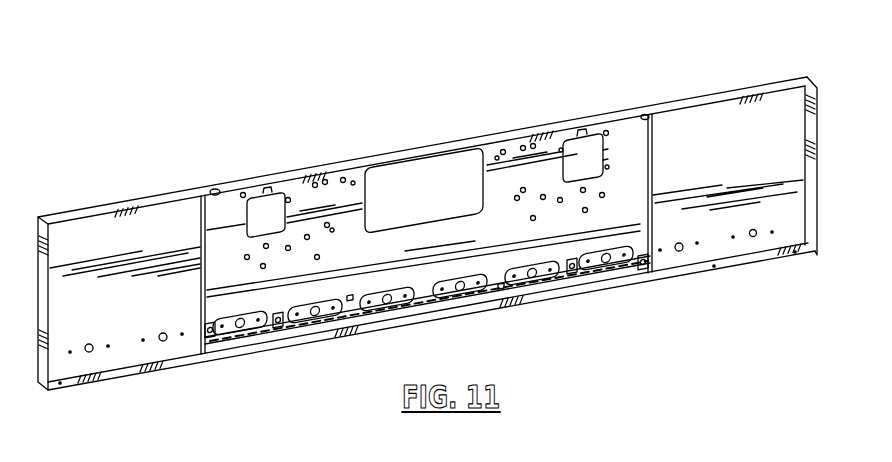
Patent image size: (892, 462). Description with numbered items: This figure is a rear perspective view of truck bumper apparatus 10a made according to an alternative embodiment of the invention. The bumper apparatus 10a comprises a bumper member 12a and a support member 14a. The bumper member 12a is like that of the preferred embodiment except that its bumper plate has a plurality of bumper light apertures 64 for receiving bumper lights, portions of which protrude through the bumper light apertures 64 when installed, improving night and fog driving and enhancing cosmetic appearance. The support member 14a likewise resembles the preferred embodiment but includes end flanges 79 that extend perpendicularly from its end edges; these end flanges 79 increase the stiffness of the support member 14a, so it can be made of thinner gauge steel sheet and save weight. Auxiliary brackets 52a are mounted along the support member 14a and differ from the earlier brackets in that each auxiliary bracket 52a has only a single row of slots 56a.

The bumper apparatus 10a is at (404, 128).
The bumper member 12a is at (772, 208).
The support member 14a is at (358, 290).
The auxiliary brackets 52a is at (299, 338).
The slots 56a is at (590, 283).
The bumper light apertures 64 is at (752, 236).
The end flanges 79 is at (203, 312).